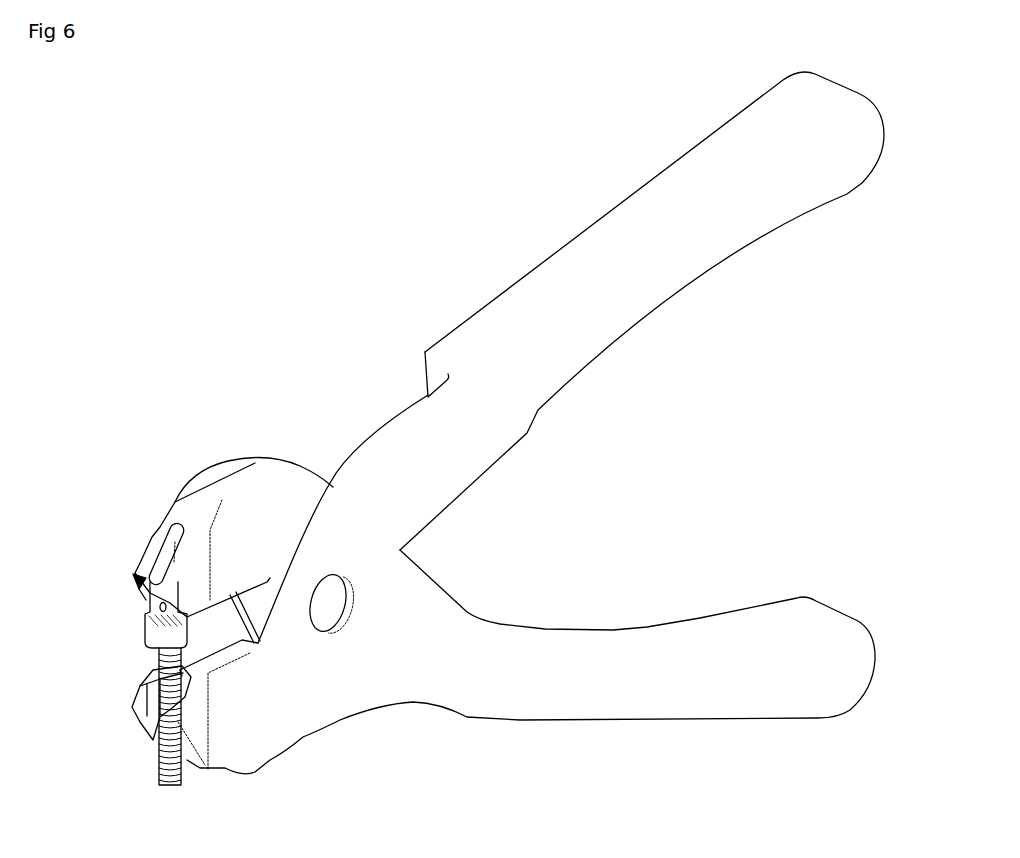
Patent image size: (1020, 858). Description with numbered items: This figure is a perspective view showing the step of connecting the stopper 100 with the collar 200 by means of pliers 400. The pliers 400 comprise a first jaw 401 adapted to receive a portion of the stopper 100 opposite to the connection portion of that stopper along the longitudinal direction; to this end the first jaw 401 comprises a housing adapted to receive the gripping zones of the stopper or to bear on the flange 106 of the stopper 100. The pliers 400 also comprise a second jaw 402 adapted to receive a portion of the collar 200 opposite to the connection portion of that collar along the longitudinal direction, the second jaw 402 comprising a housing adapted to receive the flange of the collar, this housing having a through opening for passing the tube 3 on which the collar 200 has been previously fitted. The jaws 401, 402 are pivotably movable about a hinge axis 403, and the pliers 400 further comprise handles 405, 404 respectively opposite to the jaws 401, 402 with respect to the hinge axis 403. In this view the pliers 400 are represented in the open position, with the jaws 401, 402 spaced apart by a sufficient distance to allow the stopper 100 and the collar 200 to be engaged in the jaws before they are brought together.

The pliers 400 is at (780, 410).
The handle 404 is at (577, 266).
The handle 405 is at (660, 697).
The hinge axis 403 is at (338, 577).
The first jaw 401 is at (155, 545).
The second jaw 402 is at (188, 763).
The flange 106 is at (140, 576).
The stopper 100 is at (122, 626).
The collar 200 is at (145, 692).
The tube 3 is at (156, 770).